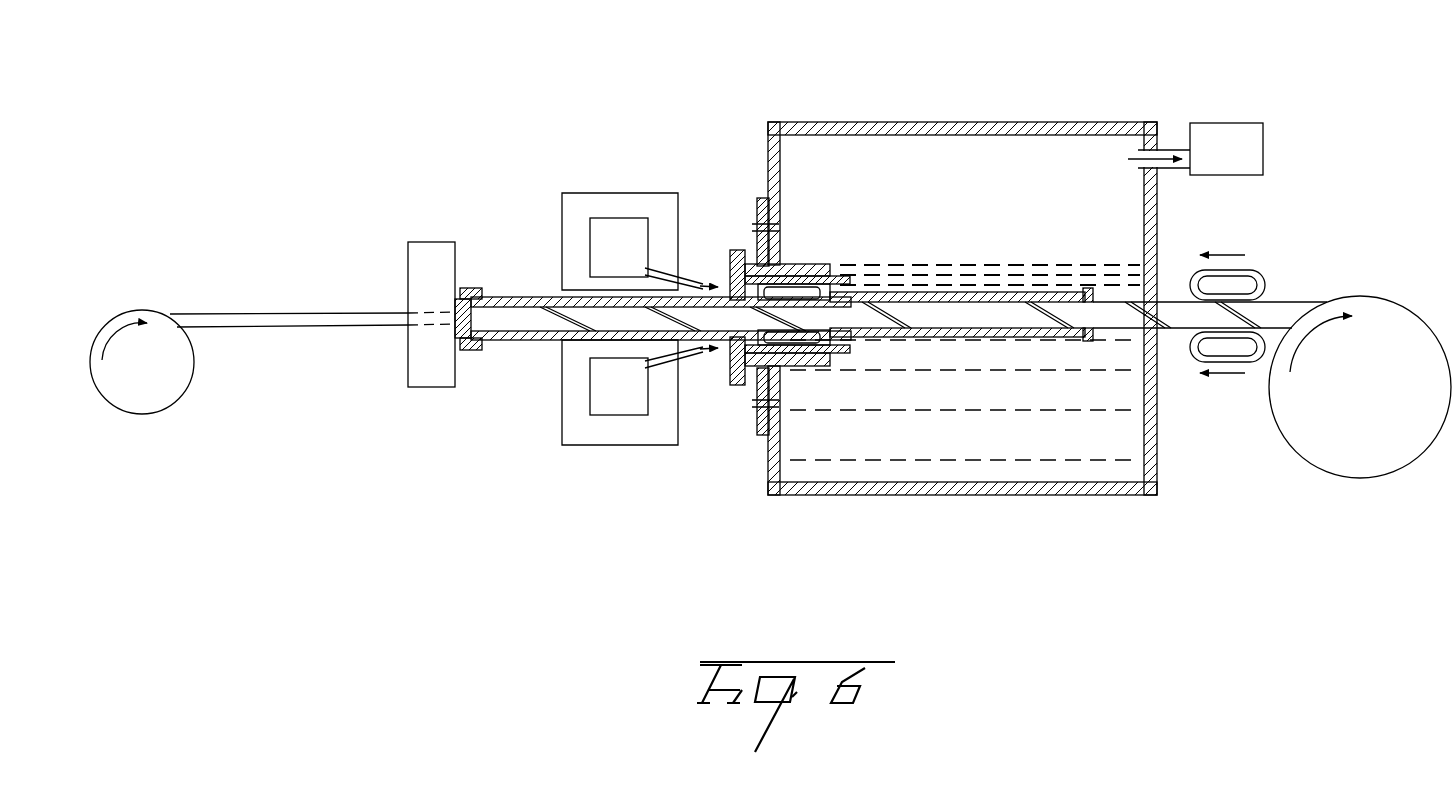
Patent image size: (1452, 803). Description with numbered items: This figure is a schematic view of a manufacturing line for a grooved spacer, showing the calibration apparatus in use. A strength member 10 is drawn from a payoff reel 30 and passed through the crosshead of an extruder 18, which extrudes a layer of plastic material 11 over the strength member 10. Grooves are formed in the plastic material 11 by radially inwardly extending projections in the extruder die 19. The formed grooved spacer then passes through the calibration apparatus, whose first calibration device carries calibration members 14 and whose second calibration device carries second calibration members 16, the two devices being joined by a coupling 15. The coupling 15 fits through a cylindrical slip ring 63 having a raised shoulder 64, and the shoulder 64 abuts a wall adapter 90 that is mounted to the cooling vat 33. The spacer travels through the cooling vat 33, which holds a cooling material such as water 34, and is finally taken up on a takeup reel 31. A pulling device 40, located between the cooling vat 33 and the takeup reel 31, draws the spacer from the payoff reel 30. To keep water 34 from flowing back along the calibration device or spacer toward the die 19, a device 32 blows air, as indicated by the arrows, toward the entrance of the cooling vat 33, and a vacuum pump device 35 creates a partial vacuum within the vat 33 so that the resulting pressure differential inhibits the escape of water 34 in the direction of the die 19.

The strength member 10 is at (280, 313).
The plastic material 11 is at (507, 312).
The calibration members 14 is at (530, 297).
The coupling 15 is at (842, 270).
The second calibration members 16 is at (968, 297).
The extruder 18 is at (418, 242).
The extruder die 19 is at (463, 350).
The payoff reel 30 is at (128, 381).
The takeup reel 31 is at (1352, 406).
The air blowing device 32 is at (605, 193).
The cooling vat 33 is at (1052, 495).
The water 34 is at (930, 448).
The vacuum pump device 35 is at (1212, 166).
The pulling device 40 is at (1265, 285).
The cylindrical slip ring 63 is at (808, 265).
The raised shoulder 64 is at (740, 250).
The wall adapter 90 is at (755, 200).